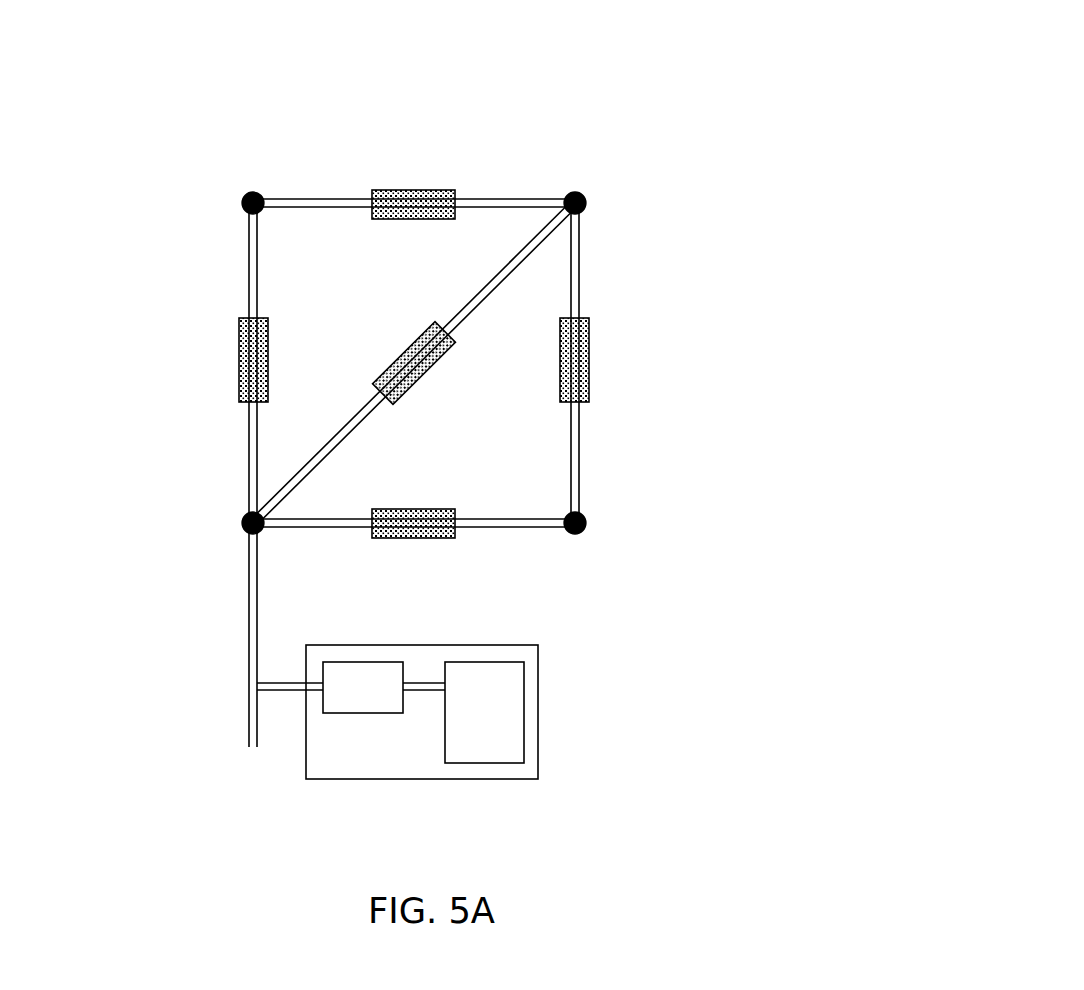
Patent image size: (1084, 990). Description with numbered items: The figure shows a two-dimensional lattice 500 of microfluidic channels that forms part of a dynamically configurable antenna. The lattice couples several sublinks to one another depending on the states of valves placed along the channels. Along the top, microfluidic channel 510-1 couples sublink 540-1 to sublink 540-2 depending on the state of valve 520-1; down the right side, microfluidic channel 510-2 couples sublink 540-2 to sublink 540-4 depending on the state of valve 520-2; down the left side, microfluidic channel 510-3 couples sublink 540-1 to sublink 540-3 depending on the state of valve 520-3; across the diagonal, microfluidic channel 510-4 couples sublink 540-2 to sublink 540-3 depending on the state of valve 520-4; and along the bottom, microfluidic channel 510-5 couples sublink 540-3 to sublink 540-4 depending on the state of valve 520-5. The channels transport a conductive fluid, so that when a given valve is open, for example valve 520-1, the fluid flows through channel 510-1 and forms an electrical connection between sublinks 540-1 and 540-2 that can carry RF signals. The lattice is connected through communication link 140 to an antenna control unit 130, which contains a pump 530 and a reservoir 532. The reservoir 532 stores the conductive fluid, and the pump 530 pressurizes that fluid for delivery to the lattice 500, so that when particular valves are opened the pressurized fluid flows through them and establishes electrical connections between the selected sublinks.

The 2D lattice 500 is at (638, 50).
The microfluidic channel 510-1 is at (337, 199).
The microfluidic channel 510-2 is at (580, 265).
The microfluidic channel 510-3 is at (248, 265).
The microfluidic channel 510-4 is at (497, 275).
The microfluidic channel 510-5 is at (509, 519).
The valve 520-1 is at (416, 190).
The valve 520-2 is at (589, 356).
The valve 520-3 is at (239, 350).
The valve 520-4 is at (393, 362).
The valve 520-5 is at (410, 508).
The sublink 540-1 is at (251, 194).
The sublink 540-2 is at (585, 197).
The sublink 540-3 is at (243, 521).
The sublink 540-4 is at (583, 531).
The communication link 140 is at (249, 730).
The antenna control unit 130 is at (538, 703).
The pump 530 is at (386, 699).
The reservoir 532 is at (508, 699).